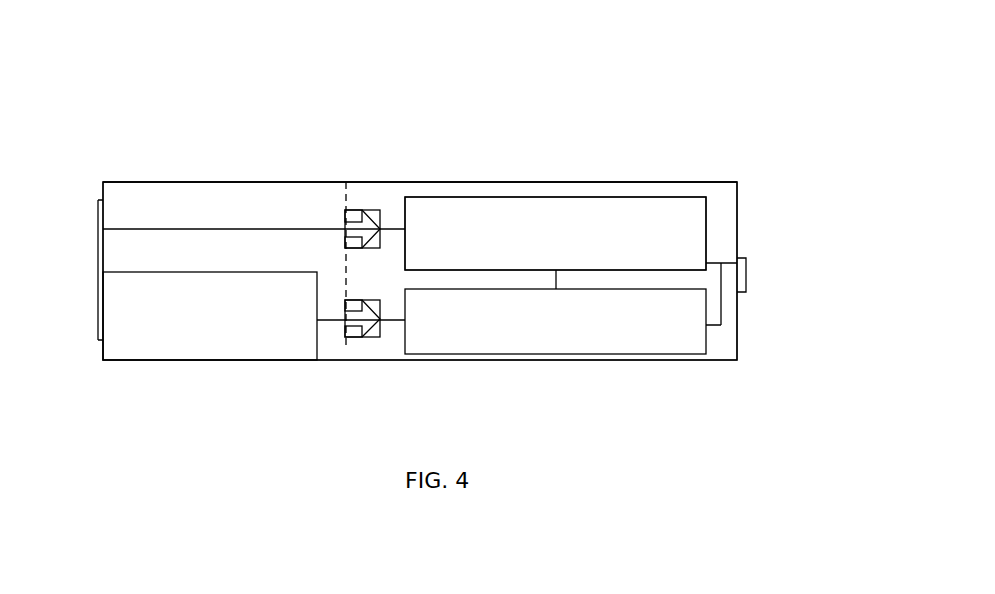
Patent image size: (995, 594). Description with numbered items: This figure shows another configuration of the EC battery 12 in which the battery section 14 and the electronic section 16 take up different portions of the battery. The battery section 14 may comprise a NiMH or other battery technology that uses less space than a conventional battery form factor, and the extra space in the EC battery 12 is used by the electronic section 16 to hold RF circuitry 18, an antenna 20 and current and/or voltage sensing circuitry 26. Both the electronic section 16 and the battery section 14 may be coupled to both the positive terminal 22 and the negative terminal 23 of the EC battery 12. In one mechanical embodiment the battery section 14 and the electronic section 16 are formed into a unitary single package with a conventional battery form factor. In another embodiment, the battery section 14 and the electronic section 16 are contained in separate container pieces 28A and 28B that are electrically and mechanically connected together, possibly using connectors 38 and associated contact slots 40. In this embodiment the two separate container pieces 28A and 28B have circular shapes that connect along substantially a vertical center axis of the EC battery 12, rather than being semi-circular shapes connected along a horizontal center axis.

The EC battery 12 is at (752, 81).
The battery section 14 is at (140, 348).
The electronic section 16 is at (663, 192).
The RF circuitry 18 is at (555, 201).
The antenna 20 is at (547, 197).
The positive terminal 22 is at (745, 255).
The negative terminal 23 is at (98, 255).
The current and/or voltage sensing circuitry 26 is at (632, 340).
The container piece 28A is at (285, 182).
The container piece 28B is at (448, 182).
The connector 38 is at (381, 229).
The contact slot 40 is at (360, 336).